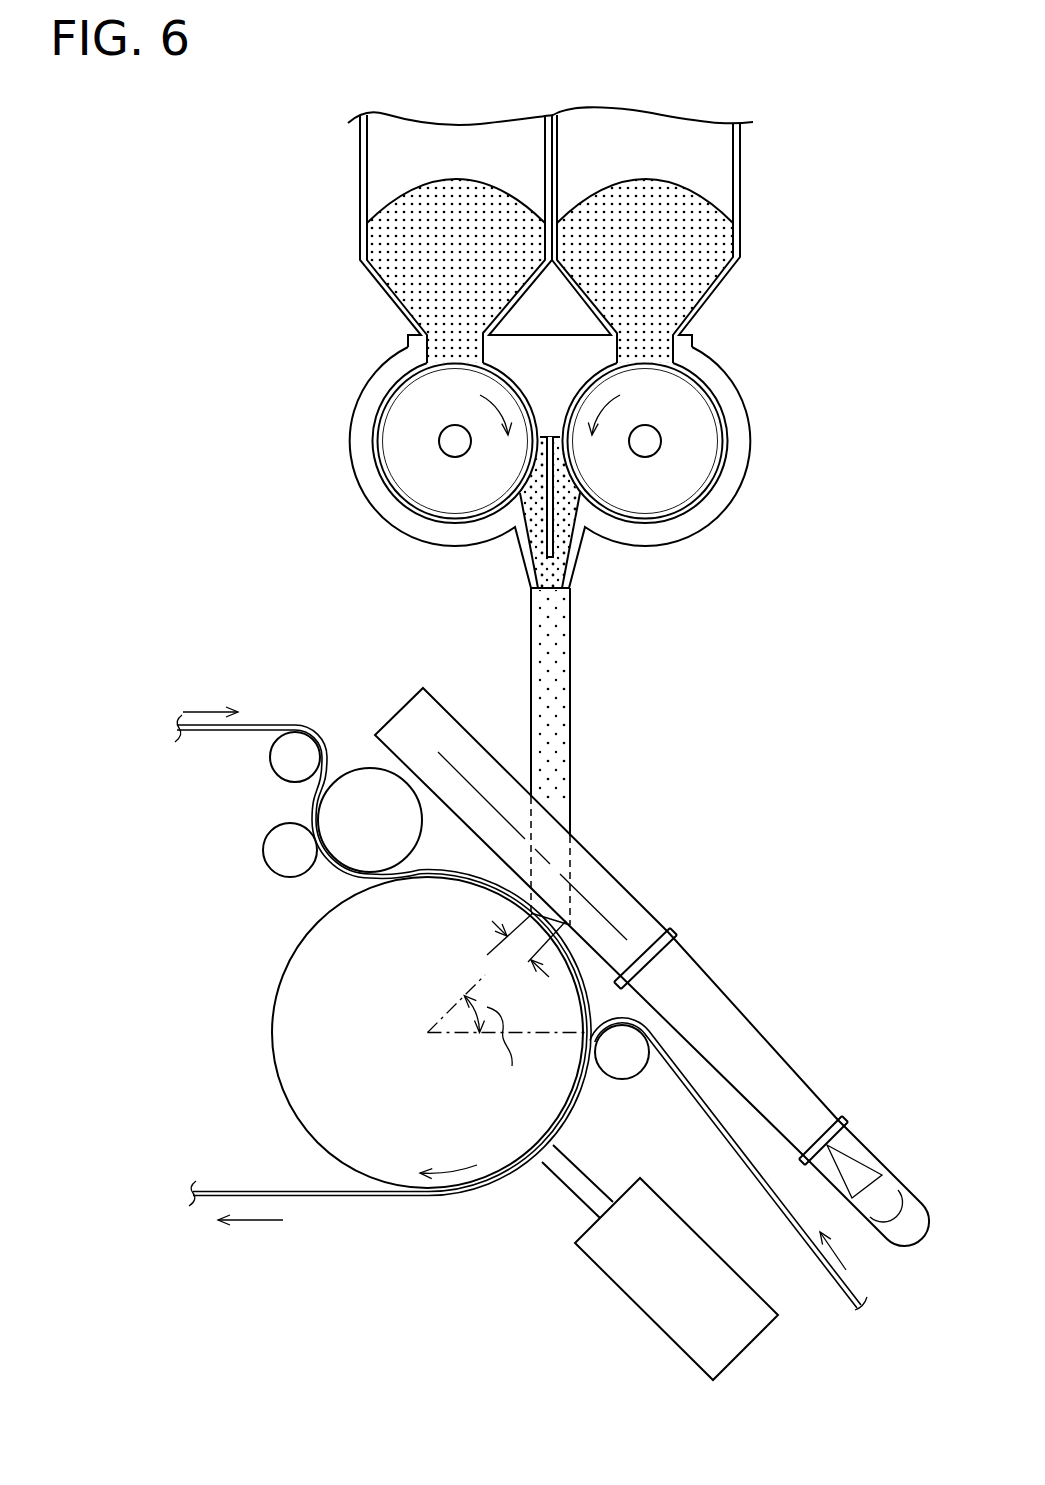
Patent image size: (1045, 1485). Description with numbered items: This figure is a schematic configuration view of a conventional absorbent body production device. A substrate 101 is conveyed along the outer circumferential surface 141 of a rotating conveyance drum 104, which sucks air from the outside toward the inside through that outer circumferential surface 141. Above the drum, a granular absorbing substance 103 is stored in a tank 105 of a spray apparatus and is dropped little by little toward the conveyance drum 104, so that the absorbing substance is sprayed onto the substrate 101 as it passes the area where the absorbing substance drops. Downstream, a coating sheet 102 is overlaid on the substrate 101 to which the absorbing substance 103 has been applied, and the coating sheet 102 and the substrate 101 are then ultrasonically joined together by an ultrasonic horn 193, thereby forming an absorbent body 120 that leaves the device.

The substrate 101 is at (194, 738).
The coating sheet 102 is at (705, 1122).
The granular absorbing substance 103 is at (480, 202).
The conveyance drum 104 is at (293, 1003).
The tank 105 is at (390, 157).
The absorbent body 120 is at (323, 1195).
The outer circumferential surface 141 is at (303, 937).
The ultrasonic horn 193 is at (573, 1180).